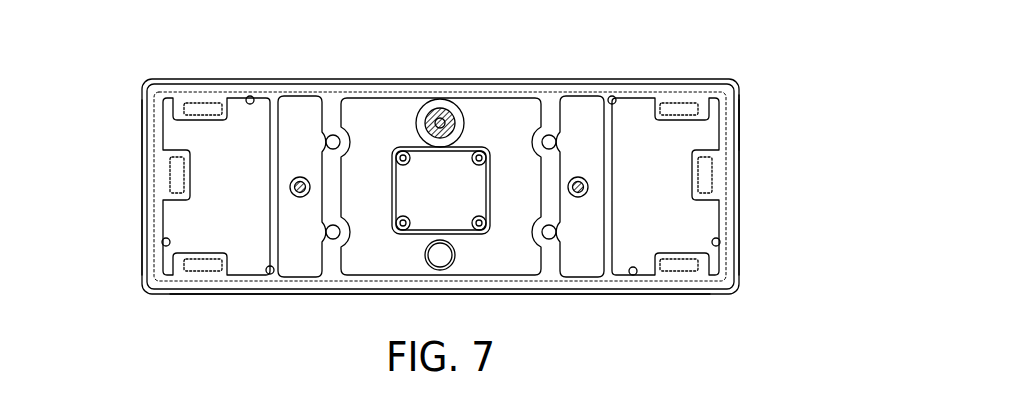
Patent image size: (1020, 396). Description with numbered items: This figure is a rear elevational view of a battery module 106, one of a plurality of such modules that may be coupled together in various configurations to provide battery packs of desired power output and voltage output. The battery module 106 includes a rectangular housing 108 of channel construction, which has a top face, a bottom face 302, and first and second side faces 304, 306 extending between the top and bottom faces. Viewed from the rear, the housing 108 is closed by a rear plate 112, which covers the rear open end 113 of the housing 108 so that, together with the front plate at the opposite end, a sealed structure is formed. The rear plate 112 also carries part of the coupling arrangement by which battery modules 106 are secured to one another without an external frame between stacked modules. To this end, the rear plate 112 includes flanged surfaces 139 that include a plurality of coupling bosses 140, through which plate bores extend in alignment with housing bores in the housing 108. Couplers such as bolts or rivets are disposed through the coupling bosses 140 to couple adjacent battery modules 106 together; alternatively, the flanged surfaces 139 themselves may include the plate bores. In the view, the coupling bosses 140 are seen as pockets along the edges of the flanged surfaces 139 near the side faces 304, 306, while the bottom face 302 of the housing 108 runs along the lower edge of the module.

The battery module 106 is at (800, 135).
The housing 108 is at (148, 84).
The rear plate 112 is at (505, 130).
The rear open end 113 is at (734, 123).
The flanged surfaces 139 is at (250, 100).
The coupling bosses 140 is at (212, 100).
The bottom face 302 is at (565, 294).
The first side face 304 is at (740, 199).
The second side face 306 is at (142, 125).